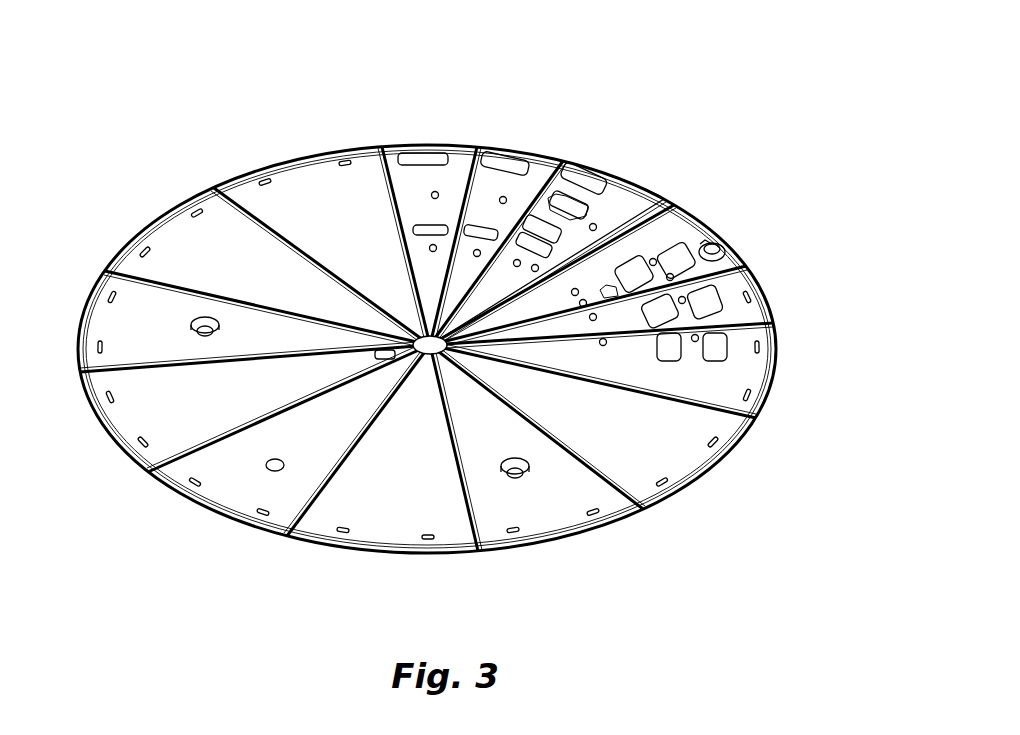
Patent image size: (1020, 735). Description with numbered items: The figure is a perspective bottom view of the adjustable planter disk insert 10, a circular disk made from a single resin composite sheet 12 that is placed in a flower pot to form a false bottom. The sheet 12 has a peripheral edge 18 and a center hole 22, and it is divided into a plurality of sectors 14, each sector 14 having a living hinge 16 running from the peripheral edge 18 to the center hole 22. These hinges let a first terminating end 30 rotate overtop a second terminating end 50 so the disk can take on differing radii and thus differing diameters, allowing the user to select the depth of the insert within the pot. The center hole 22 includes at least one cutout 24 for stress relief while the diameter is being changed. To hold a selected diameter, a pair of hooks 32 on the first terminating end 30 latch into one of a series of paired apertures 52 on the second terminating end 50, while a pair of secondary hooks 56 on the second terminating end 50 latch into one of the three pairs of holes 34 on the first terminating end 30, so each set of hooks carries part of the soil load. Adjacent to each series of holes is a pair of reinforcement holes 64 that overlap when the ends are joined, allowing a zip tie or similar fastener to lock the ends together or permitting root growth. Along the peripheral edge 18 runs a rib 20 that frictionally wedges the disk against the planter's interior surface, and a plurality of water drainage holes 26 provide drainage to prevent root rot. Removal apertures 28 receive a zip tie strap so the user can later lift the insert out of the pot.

The adjustable planter disk insert 10 is at (628, 133).
The resin composite sheet 12 is at (312, 185).
The sector 14 is at (229, 183).
The living hinge 16 is at (260, 213).
The peripheral edge 18 is at (160, 215).
The rib 20 is at (120, 245).
The center hole 22 is at (430, 336).
The cutout 24 is at (387, 350).
The water drainage hole 26 is at (110, 293).
The removal aperture 28 is at (204, 318).
The first terminating end 30 is at (672, 197).
The hook 32 is at (557, 197).
The paired holes 34 is at (605, 181).
The second terminating end 50 is at (702, 215).
The paired apertures 52 is at (710, 302).
The secondary hook 56 is at (733, 250).
The reinforcement hole 64 is at (438, 195).